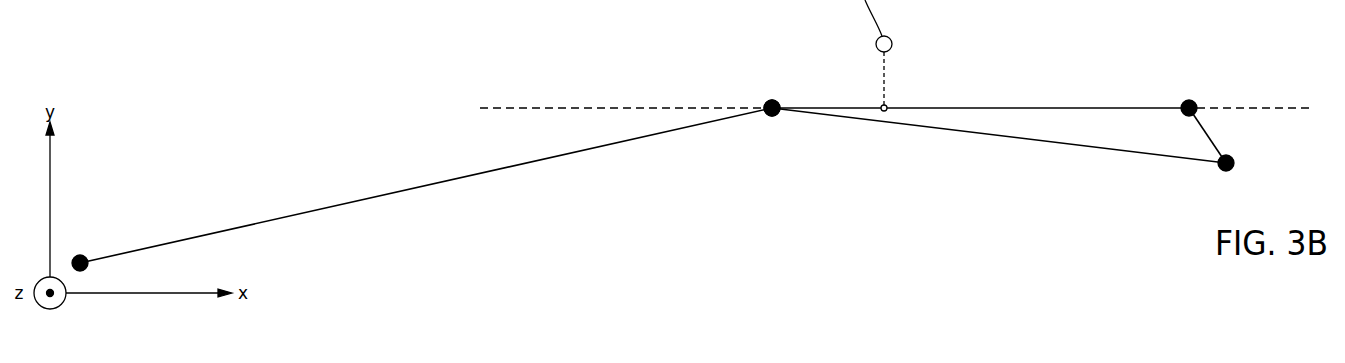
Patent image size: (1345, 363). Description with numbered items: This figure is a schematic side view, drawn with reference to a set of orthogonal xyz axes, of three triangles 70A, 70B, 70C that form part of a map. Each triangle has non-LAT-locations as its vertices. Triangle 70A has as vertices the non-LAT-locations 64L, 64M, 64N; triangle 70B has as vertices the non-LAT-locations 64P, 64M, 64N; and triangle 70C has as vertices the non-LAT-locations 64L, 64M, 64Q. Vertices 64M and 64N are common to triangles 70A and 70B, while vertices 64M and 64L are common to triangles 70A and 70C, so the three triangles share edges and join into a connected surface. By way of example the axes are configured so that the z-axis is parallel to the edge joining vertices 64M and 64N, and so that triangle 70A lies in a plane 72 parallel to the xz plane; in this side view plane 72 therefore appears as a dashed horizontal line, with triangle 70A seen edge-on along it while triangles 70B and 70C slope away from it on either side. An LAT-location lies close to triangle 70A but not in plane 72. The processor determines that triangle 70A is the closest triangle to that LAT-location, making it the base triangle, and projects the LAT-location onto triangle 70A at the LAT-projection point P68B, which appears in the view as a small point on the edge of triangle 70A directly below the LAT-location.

The non-LAT-location 64P is at (82, 257).
The non-LAT-location 64M is at (768, 101).
The non-LAT-location 64N is at (775, 117).
The non-LAT-location 64L is at (1184, 101).
The non-LAT-location 64Q is at (1234, 163).
The triangle 70A is at (1033, 106).
The triangle 70B is at (425, 187).
The triangle 70C is at (1070, 125).
The plane 72 is at (560, 103).
The LAT-projection point P68B is at (888, 107).